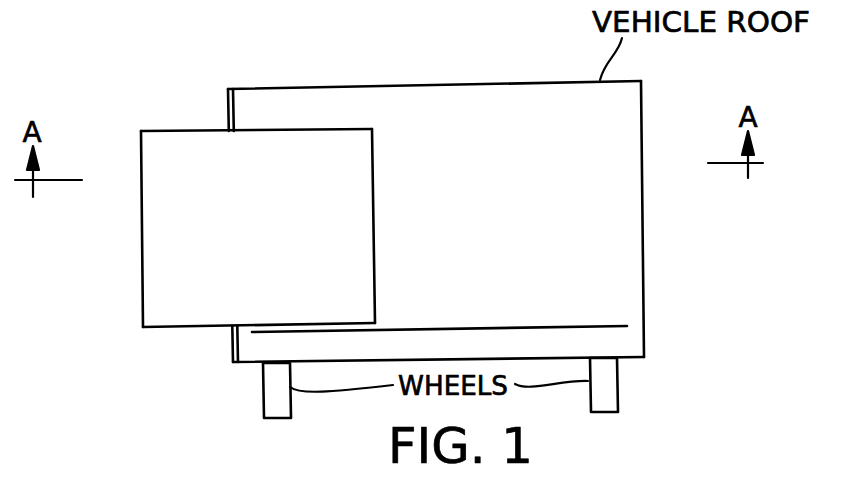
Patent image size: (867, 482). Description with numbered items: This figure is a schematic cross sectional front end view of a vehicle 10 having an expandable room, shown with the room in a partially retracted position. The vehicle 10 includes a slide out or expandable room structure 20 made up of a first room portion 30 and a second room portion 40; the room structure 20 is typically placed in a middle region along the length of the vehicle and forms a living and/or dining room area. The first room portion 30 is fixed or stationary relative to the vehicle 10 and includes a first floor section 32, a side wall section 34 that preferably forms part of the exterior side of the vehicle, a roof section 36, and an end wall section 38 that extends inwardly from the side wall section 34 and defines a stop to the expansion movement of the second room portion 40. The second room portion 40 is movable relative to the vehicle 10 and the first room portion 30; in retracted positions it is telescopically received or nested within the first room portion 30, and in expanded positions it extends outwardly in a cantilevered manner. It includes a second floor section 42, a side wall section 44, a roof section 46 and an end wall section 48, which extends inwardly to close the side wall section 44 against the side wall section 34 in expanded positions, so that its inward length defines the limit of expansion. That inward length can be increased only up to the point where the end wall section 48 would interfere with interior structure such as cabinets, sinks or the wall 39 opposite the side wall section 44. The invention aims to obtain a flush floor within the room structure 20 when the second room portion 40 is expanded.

The vehicle 10 is at (644, 267).
The expandable room structure 20 is at (412, 125).
The first room portion 30 is at (515, 224).
The first floor section 32 is at (453, 326).
The side wall section 34 is at (227, 112).
The roof section 36 is at (483, 85).
The end wall section 38 is at (234, 102).
The wall 39 is at (642, 163).
The second room portion 40 is at (262, 231).
The second floor section 42 is at (273, 324).
The side wall section 44 is at (141, 248).
The roof section 46 is at (272, 131).
The end wall section 48 is at (352, 265).